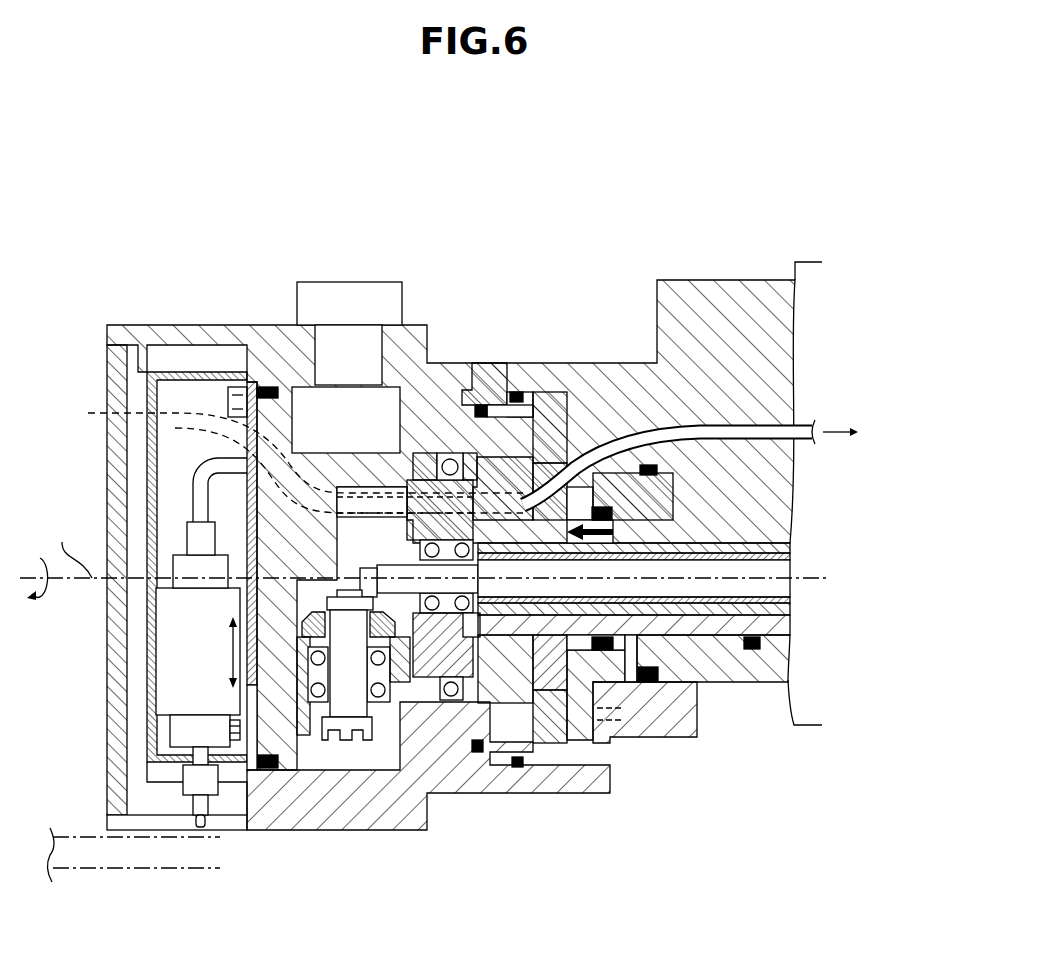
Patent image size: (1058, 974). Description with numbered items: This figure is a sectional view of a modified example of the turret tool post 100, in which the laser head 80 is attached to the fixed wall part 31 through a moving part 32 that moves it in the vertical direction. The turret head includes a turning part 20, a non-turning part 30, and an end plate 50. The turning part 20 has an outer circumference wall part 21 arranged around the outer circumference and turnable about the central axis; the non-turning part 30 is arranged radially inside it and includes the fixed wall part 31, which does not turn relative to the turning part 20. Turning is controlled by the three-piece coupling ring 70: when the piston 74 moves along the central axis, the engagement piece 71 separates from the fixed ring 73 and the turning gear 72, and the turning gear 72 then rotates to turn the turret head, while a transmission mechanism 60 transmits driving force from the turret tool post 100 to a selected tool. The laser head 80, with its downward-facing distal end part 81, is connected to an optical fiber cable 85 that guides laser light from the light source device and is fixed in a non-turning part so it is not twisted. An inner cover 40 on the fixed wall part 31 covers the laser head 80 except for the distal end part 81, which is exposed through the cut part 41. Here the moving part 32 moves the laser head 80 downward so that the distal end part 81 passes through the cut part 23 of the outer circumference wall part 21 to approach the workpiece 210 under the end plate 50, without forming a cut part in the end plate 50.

The turret tool post 100 is at (536, 208).
The turning part 20 is at (291, 320).
The outer circumference wall part 21 is at (278, 348).
The cut part 23 is at (146, 826).
The non-turning part 30 is at (324, 590).
The fixed wall part 31 is at (250, 750).
The moving part 32 is at (290, 662).
The inner cover 40 is at (150, 476).
The cut part 41 is at (208, 760).
The end plate 50 is at (107, 712).
The transmission mechanism 60 is at (401, 622).
The three-piece coupling ring 70 is at (492, 298).
The engagement piece 71 is at (499, 470).
The turning gear 72 is at (547, 485).
The fixed ring 73 is at (548, 500).
The piston 74 is at (650, 485).
The laser head 80 is at (200, 630).
The distal end part 81 is at (196, 822).
The optical fiber cable 85 is at (752, 432).
The workpiece 210 is at (77, 857).